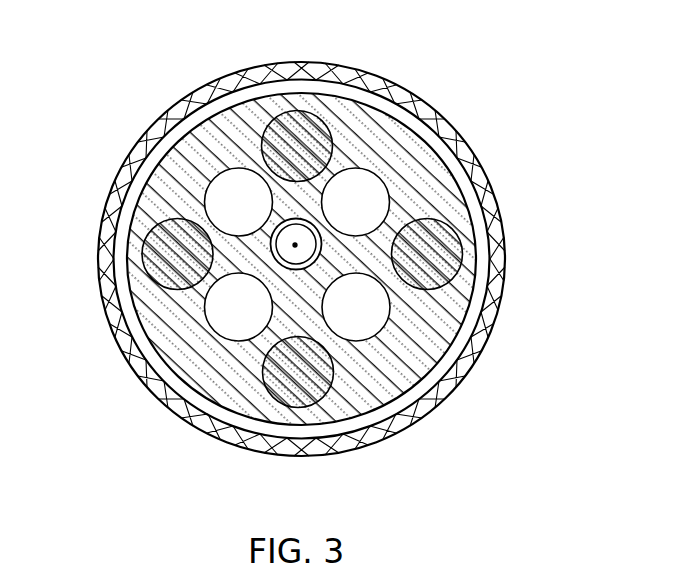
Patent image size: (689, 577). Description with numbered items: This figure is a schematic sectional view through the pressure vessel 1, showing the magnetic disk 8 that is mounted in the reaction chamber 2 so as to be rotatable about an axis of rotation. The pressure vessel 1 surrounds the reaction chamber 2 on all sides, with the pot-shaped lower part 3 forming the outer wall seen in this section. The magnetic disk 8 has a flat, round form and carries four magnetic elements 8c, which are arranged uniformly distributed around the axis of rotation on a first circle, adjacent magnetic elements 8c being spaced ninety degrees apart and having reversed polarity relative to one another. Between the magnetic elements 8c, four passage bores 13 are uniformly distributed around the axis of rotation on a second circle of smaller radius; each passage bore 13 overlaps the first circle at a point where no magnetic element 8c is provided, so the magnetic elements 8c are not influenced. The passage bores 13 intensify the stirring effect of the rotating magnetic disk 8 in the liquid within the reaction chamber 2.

The pressure vessel 1 is at (495, 325).
The reaction chamber 2 is at (302, 259).
The lower part 3 is at (301, 259).
The magnetic disk 8 is at (187, 176).
The magnetic elements 8c is at (292, 122).
The passage bores 13 is at (228, 207).